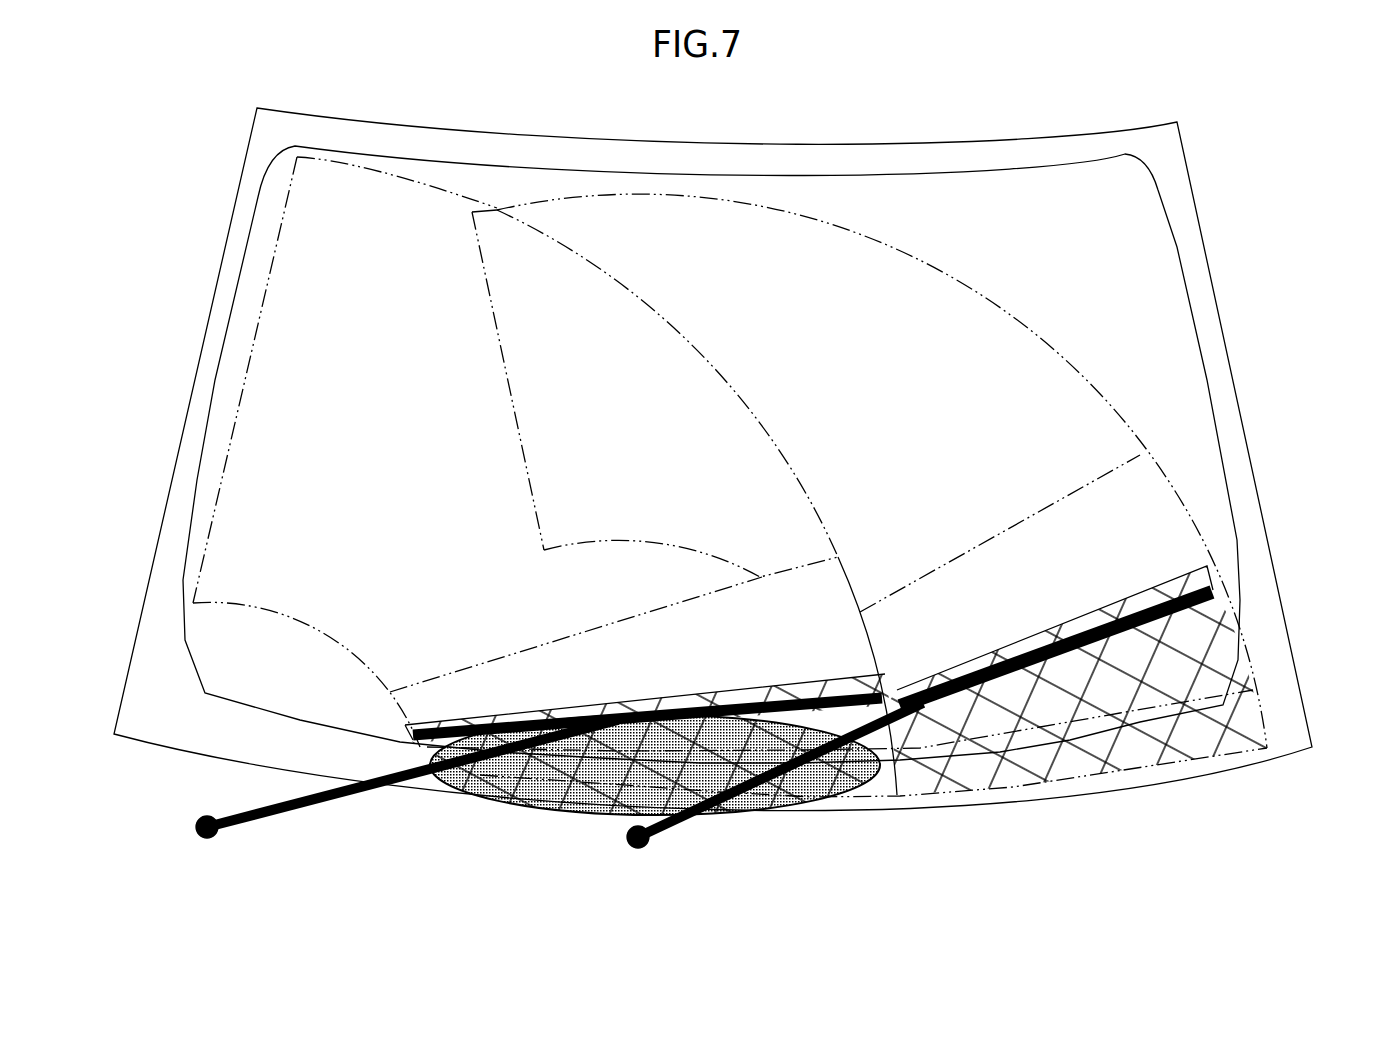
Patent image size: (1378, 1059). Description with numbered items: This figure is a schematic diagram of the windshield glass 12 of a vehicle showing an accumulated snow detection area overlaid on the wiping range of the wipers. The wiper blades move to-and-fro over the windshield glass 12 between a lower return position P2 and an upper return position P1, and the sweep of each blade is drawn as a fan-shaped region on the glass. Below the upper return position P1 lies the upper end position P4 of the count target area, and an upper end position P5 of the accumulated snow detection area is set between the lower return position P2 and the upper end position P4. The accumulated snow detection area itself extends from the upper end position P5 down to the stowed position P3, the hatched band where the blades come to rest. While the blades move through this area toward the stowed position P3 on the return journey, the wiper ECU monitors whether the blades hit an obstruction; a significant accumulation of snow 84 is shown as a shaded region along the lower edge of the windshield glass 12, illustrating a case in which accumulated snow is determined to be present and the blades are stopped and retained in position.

The windshield glass 12 is at (747, 146).
The accumulated snow 84 is at (545, 800).
The upper return position P1 is at (250, 348).
The lower return position P2 is at (1213, 690).
The stowed position P3 is at (835, 800).
The upper end position of the count target area P4 is at (505, 656).
The upper end position of the accumulated snow detection area P5 is at (775, 690).